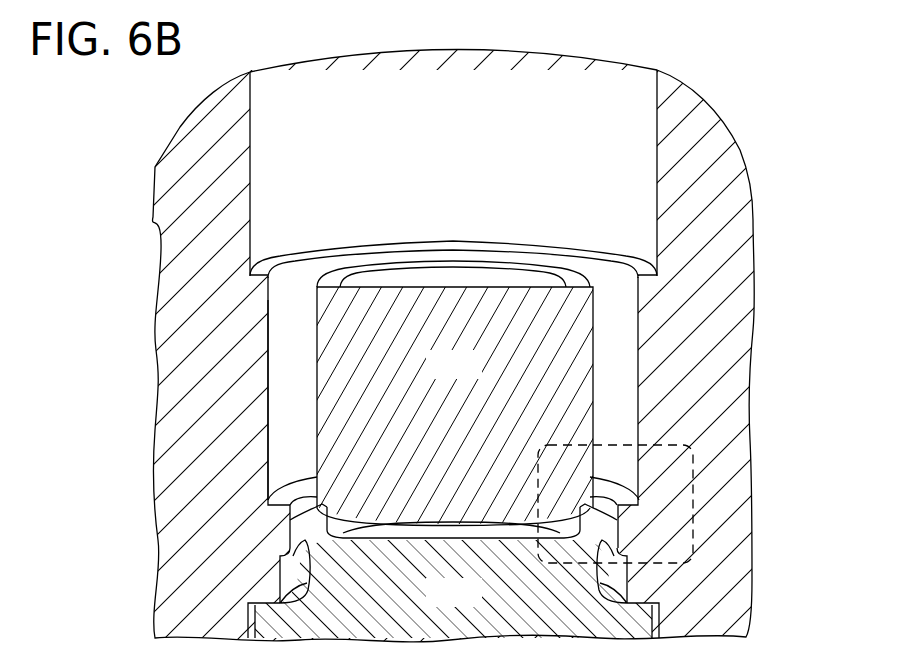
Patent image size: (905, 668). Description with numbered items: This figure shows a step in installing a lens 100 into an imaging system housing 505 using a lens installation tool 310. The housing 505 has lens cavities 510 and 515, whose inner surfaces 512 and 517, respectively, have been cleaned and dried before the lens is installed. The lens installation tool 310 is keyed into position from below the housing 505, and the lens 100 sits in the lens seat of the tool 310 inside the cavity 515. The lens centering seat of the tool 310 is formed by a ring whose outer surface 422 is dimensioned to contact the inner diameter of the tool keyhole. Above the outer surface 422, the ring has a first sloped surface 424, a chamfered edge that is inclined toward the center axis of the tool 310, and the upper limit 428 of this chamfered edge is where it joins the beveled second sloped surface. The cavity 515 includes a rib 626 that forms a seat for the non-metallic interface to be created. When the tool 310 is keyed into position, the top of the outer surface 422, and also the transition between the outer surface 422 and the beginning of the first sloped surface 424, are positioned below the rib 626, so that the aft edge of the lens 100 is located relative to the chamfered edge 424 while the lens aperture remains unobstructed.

The imaging system housing 505 is at (730, 267).
The lens cavity 510 is at (382, 79).
The inner surface 512 is at (500, 95).
The lens cavity 515 is at (268, 361).
The inner surface 517 is at (290, 407).
The lens 100 is at (478, 375).
The first sloped surface 424 is at (598, 480).
The upper limit of the chamfered edge 428 is at (290, 516).
The outer surface 422 is at (303, 553).
The lens installation tool 310 is at (478, 603).
The rib 626 is at (690, 445).